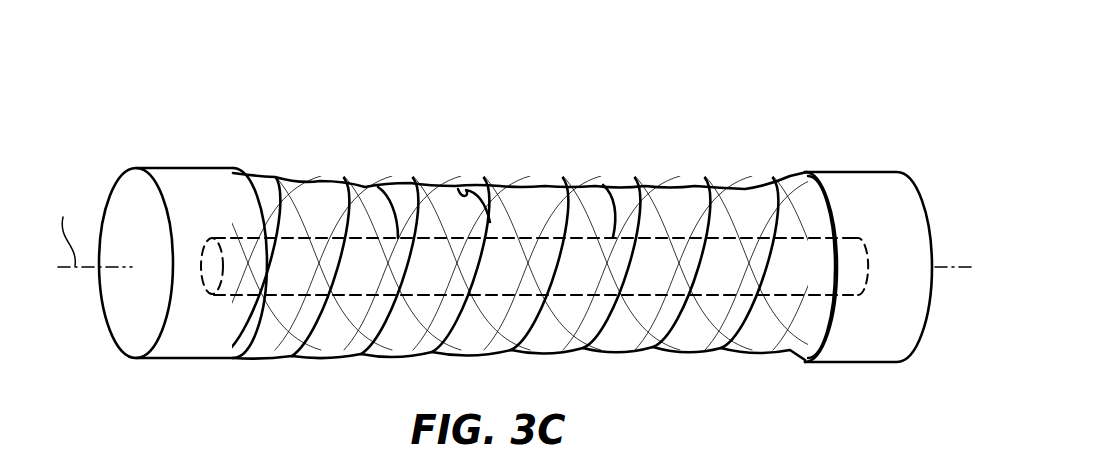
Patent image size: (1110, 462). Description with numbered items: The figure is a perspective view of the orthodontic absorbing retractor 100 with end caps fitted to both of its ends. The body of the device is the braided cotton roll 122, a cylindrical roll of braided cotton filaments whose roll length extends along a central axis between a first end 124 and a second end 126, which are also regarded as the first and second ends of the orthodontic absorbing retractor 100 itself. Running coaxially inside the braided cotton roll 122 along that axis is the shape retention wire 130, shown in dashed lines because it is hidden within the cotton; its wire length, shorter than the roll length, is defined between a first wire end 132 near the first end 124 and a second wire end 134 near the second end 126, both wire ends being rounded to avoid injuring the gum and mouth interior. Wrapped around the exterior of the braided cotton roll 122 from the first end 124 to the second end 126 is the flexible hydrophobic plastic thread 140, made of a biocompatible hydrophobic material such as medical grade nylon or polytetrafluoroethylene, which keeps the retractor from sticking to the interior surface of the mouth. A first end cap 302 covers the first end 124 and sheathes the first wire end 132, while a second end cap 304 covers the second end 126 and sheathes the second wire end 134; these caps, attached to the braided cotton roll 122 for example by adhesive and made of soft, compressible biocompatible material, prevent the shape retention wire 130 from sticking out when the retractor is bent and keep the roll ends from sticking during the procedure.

The orthodontic absorbing retractor 100 is at (799, 54).
The braided cotton roll 122 is at (598, 194).
The first end 124 is at (100, 179).
The second end 126 is at (938, 196).
The shape retention wire 130 is at (378, 187).
The first wire end 132 is at (207, 240).
The second wire end 134 is at (868, 257).
The flexible hydrophobic plastic thread 140 is at (465, 194).
The first end cap 302 is at (148, 167).
The second end cap 304 is at (823, 171).